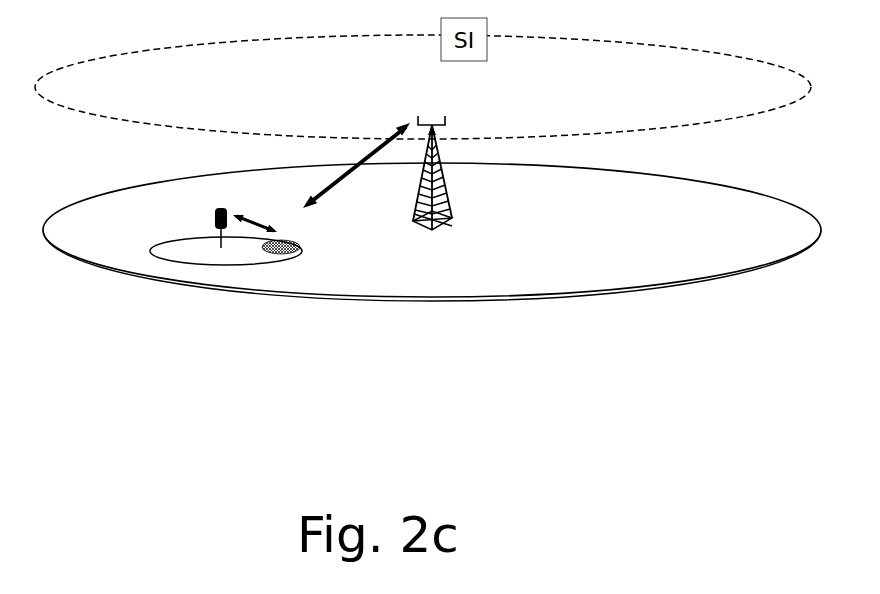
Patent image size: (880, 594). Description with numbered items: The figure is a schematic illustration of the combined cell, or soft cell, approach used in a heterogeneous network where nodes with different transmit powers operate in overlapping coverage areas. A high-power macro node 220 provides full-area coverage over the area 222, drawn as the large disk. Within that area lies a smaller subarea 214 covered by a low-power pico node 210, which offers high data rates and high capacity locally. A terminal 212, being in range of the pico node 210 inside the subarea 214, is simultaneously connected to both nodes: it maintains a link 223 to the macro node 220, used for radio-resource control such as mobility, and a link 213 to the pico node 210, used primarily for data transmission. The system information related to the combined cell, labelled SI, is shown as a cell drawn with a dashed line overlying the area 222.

The pico node 210 is at (205, 211).
The terminal 212 is at (275, 255).
The short-range link 213 is at (255, 230).
The subarea 214 is at (150, 252).
The macro node 220 is at (442, 232).
The area 222 is at (620, 278).
The communication link 223 is at (350, 170).